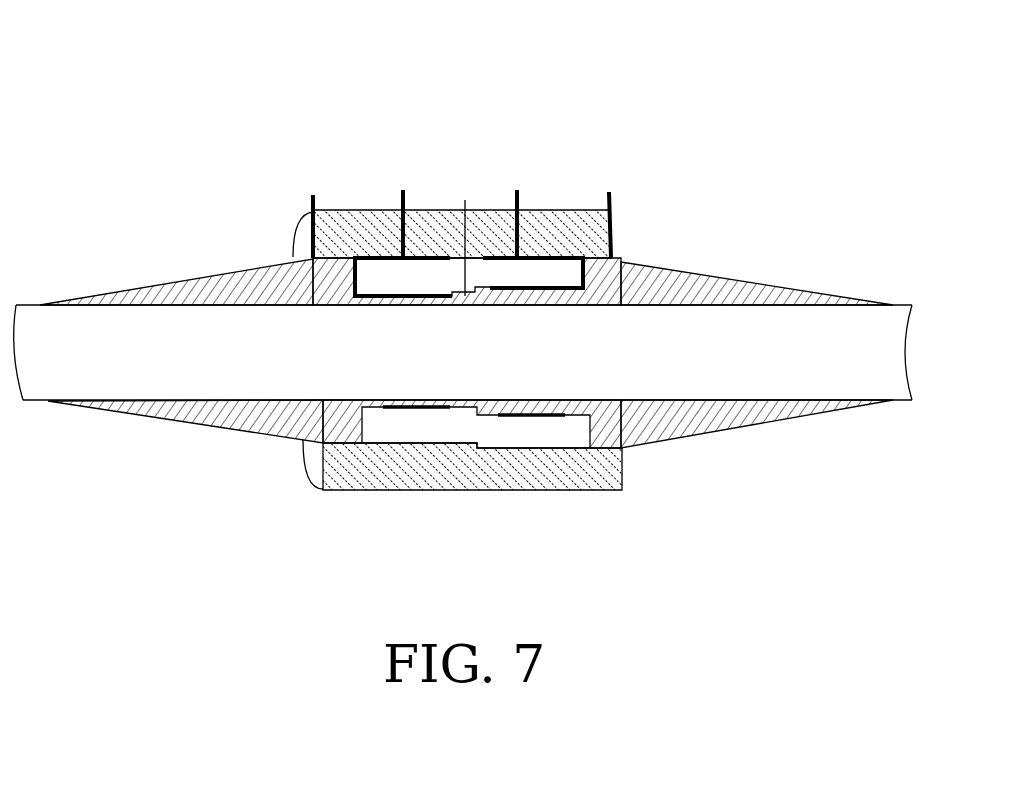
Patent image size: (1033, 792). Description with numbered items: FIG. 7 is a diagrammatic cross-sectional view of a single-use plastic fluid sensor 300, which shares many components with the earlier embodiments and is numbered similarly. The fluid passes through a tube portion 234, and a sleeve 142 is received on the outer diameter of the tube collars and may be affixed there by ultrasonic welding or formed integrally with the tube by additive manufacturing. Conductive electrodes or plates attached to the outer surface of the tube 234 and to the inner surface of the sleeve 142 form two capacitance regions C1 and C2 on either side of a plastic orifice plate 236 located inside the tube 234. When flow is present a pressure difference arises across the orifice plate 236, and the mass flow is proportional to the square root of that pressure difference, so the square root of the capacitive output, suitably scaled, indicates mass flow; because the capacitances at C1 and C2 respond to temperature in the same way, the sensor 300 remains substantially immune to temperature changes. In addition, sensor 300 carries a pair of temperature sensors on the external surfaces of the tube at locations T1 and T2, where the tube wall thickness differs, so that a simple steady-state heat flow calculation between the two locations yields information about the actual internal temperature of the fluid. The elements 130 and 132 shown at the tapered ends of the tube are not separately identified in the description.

The sensor 300 is at (633, 77).
The tubular body 130 is at (153, 418).
The tapered outer wall 132 is at (800, 418).
The sleeve 142 is at (562, 208).
The tube portion 234 is at (633, 280).
The plastic orifice plate 236 is at (465, 200).
The capacitance region C1 is at (403, 224).
The capacitance region C2 is at (533, 220).
The temperature sensor location T1 is at (397, 410).
The temperature sensor location T2 is at (530, 415).